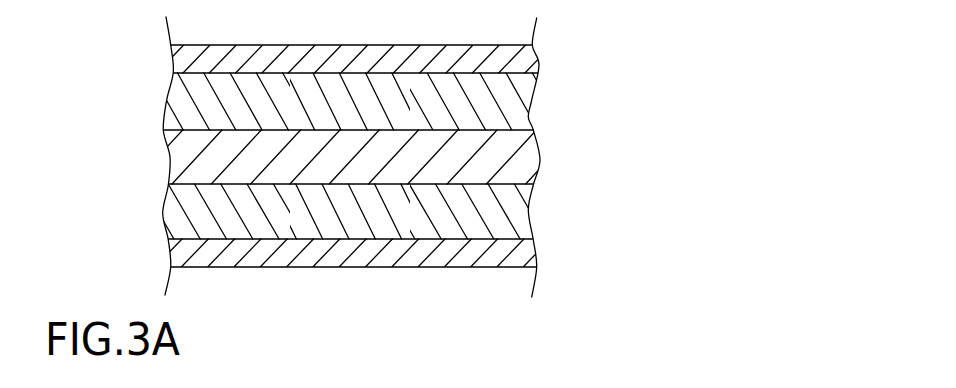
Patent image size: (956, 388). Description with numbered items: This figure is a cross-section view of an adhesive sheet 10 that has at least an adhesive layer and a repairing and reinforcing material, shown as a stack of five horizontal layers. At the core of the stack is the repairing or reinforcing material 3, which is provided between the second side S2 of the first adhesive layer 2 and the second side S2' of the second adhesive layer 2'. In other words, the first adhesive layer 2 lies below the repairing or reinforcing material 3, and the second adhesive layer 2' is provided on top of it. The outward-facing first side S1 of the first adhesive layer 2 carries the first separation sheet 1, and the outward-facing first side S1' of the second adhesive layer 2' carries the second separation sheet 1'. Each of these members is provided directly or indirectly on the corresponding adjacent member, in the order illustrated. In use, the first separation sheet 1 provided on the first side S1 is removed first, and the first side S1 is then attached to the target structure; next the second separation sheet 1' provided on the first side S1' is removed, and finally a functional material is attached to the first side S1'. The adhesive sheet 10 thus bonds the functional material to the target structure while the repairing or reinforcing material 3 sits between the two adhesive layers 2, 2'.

The first separation sheet 1 is at (374, 253).
The first adhesive layer 2 is at (370, 211).
The repairing or reinforcing material 3 is at (531, 161).
The second separation sheet 1' is at (377, 60).
The second adhesive layer 2' is at (377, 101).
The first side of the first adhesive layer S1 is at (350, 279).
The second side of the first adhesive layer S2 is at (350, 252).
The first side of the second adhesive layer S1' is at (350, 36).
The second side of the second adhesive layer S2' is at (350, 65).
The adhesive sheet 10 is at (388, 323).